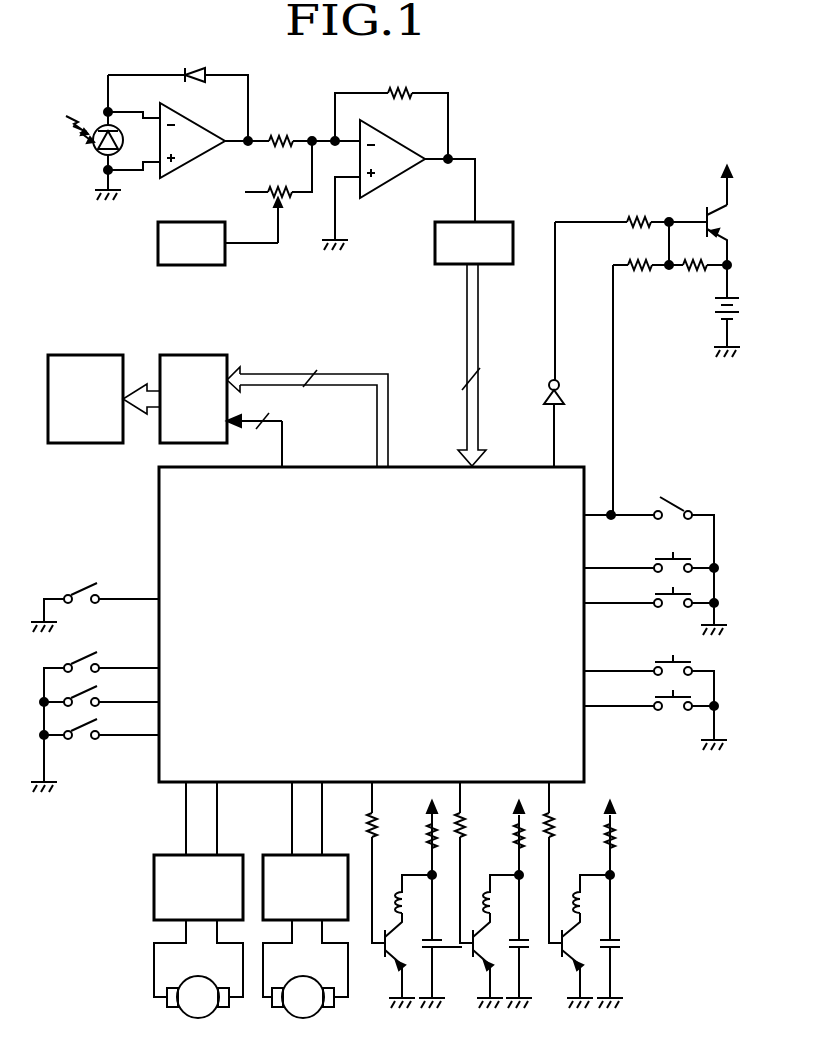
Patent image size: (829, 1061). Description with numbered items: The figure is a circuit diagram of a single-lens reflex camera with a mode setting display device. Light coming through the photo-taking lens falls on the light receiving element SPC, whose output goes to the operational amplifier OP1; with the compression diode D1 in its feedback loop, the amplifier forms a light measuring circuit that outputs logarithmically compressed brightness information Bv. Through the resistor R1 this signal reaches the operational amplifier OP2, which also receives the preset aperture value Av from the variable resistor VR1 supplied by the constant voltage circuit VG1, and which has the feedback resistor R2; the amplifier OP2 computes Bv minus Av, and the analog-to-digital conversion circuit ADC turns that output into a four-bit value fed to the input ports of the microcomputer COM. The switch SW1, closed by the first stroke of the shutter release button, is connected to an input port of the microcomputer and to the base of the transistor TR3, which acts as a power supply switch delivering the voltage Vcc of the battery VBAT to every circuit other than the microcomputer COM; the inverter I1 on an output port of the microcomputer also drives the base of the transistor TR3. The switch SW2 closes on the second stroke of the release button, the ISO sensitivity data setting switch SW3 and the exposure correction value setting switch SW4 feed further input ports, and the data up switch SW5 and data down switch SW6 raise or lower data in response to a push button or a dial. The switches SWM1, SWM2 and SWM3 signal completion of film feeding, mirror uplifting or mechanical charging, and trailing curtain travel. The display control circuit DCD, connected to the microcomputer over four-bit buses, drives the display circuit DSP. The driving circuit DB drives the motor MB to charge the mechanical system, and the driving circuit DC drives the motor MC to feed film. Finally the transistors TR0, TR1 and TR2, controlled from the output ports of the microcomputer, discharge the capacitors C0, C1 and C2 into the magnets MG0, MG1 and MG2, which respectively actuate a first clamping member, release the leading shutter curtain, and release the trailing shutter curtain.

The light receiving element SPC is at (91, 154).
The operational amplifier OP1 is at (178, 140).
The compression diode D1 is at (180, 90).
The resistor R1 is at (282, 126).
The variable resistor VR1 is at (278, 192).
The constant voltage circuit VG1 is at (218, 243).
The operational amplifier OP2 is at (393, 185).
The feedback resistor R2 is at (391, 110).
The analog-to-digital conversion circuit ADC is at (474, 344).
The voltage Vcc is at (728, 171).
The transistor TR3 is at (656, 360).
The battery VBAT is at (747, 311).
The inverter I1 is at (560, 418).
The display circuit DSP is at (104, 399).
The display control circuit DCD is at (274, 406).
The microcomputer COM is at (371, 625).
The switch SW1 is at (649, 523).
The switch SW2 is at (95, 600).
The ISO sensitivity data setting switch SW3 is at (651, 552).
The exposure correction value setting switch SW4 is at (655, 601).
The data up switch SW5 is at (649, 670).
The data down switch SW6 is at (655, 713).
The switch SWM1 is at (101, 670).
The switch SWM2 is at (99, 689).
The switch SWM3 is at (95, 747).
The driving circuit DB is at (198, 851).
The motor MB is at (198, 969).
The driving circuit DC is at (305, 851).
The motor MC is at (305, 969).
The transistor TR0 is at (391, 895).
The transistor TR1 is at (479, 895).
The transistor TR2 is at (568, 895).
The magnet MG0 is at (399, 902).
The magnet MG1 is at (486, 902).
The magnet MG2 is at (577, 902).
The capacitor C0 is at (440, 904).
The capacitor C1 is at (524, 904).
The capacitor C2 is at (617, 904).